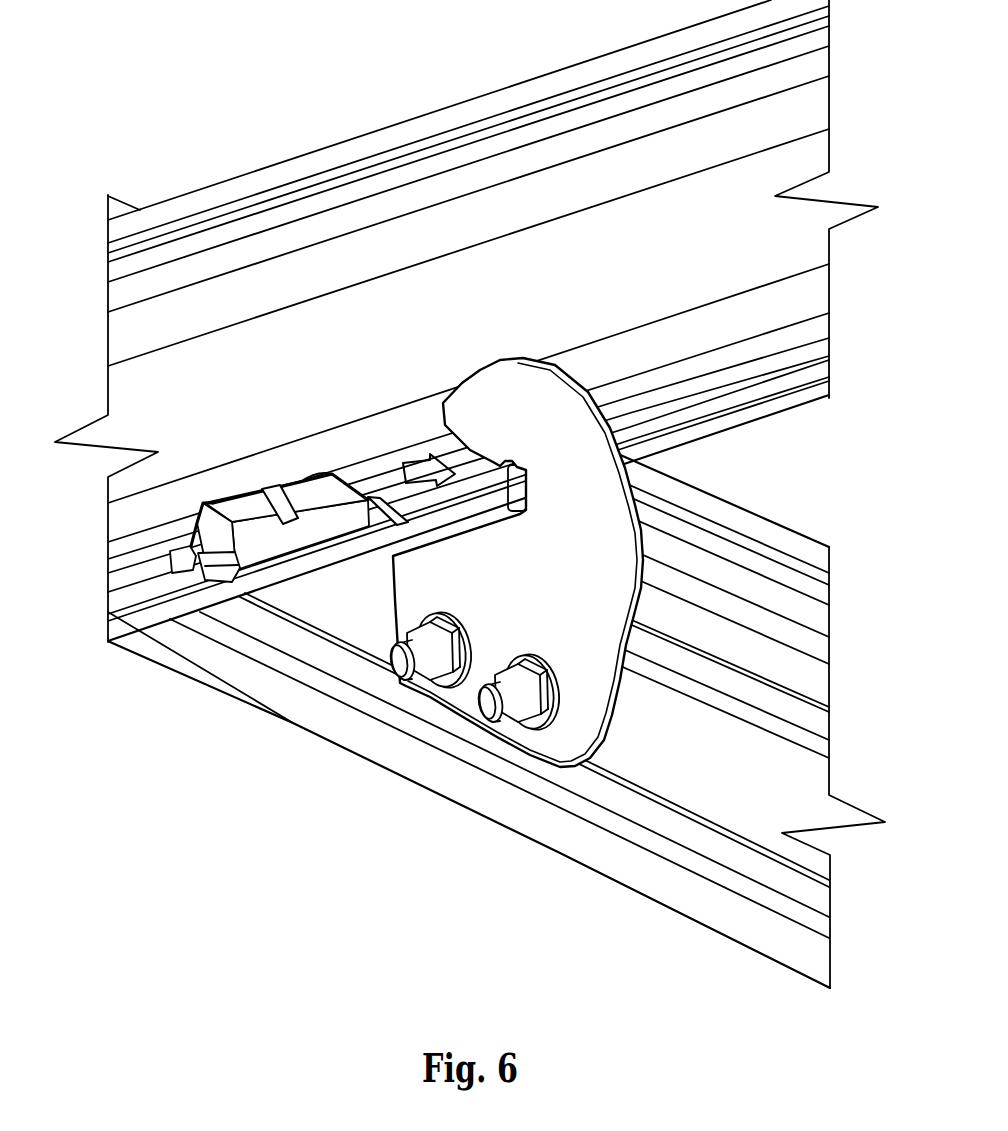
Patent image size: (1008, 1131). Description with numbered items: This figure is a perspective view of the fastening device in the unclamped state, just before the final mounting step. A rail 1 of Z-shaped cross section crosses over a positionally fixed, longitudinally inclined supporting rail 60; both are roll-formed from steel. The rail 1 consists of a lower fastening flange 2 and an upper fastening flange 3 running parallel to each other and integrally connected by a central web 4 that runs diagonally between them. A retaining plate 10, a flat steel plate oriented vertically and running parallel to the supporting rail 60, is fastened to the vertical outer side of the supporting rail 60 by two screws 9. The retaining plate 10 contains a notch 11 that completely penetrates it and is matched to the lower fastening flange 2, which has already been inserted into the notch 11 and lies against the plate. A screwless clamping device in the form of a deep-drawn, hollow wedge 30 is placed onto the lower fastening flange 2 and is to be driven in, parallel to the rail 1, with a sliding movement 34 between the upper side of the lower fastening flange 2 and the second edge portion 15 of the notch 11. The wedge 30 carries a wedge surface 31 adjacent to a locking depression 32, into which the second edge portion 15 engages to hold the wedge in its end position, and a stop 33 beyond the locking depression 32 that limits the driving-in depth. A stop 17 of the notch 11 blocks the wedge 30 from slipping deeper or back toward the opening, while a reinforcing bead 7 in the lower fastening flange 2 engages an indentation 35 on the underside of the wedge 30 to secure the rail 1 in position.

The rail 1 is at (340, 117).
The lower fastening flange 2 is at (829, 342).
The upper fastening flange 3 is at (555, 86).
The central web 4 is at (354, 365).
The reinforcing bead 7 is at (108, 597).
The screws 9 is at (488, 722).
The retaining plate 10 is at (590, 580).
The notch 11 is at (428, 441).
The second edge portion 15 is at (470, 440).
The stop 17 is at (500, 458).
The wedge 30 is at (293, 542).
The wedge surface 31 is at (326, 483).
The locking depression 32 is at (272, 496).
The stop 33 is at (238, 500).
The sliding movement 34 is at (392, 482).
The indentation 35 is at (177, 572).
The supporting rail 60 is at (302, 779).